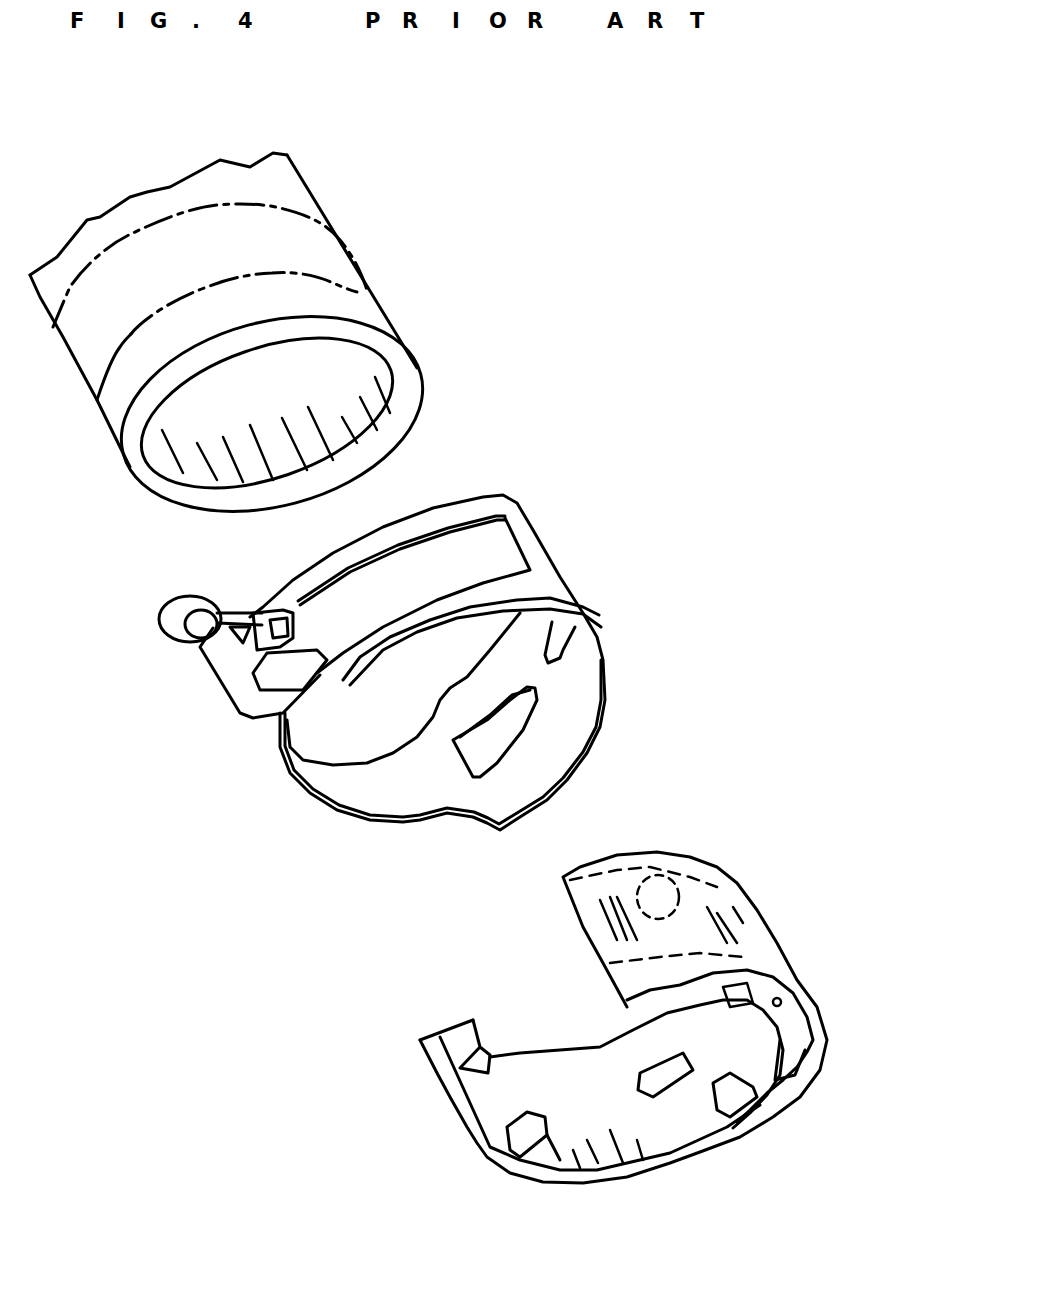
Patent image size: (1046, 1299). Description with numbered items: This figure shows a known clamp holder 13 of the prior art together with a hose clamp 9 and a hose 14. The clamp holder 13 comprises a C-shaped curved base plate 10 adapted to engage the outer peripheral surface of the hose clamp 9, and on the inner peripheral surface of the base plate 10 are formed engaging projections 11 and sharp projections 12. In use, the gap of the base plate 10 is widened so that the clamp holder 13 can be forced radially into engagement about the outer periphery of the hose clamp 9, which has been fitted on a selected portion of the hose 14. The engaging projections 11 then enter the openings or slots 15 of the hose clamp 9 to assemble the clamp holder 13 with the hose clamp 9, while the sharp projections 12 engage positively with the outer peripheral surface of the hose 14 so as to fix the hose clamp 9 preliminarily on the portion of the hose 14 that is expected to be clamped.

The hose clamp 9 is at (434, 637).
The C-shaped curved base plate 10 is at (773, 942).
The engaging projections 11 is at (797, 1083).
The sharp projections 12 is at (477, 1020).
The clamp holder 13 is at (638, 1007).
The hose 14 is at (383, 320).
The openings or slots 15 is at (445, 530).